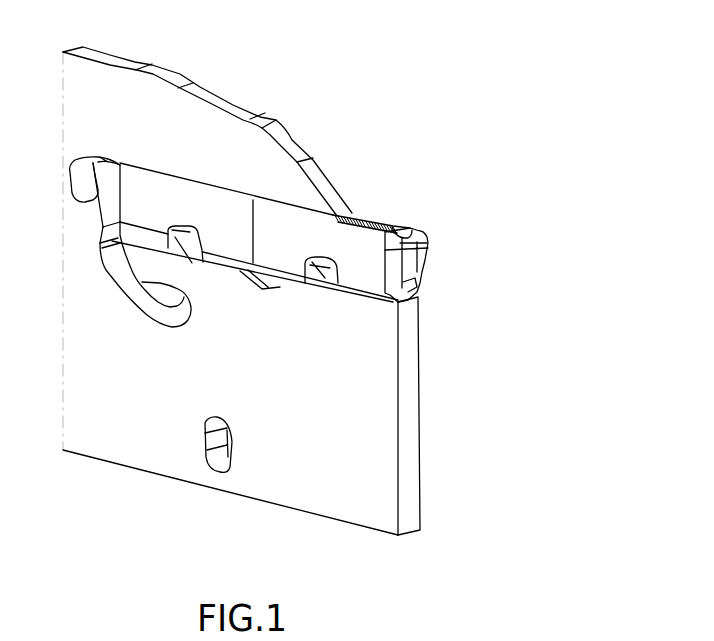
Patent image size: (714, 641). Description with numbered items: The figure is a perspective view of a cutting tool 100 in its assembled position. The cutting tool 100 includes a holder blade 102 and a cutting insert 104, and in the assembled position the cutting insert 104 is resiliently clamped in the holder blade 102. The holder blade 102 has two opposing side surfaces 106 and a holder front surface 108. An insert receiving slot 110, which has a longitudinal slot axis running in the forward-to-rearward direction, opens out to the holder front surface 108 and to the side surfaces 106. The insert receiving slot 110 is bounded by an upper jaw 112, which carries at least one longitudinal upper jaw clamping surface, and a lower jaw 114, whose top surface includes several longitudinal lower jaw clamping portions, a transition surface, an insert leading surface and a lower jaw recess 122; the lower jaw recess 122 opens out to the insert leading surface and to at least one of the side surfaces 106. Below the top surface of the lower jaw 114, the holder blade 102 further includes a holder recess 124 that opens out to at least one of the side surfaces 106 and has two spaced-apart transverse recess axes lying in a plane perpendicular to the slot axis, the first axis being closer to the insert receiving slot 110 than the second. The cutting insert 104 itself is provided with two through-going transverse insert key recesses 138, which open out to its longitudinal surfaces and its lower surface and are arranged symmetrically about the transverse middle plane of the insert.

The cutting tool 100 is at (510, 165).
The holder blade 102 is at (198, 72).
The cutting insert 104 is at (398, 218).
The side surfaces 106 is at (347, 513).
The holder front surface 108 is at (412, 447).
The insert receiving slot 110 is at (383, 210).
The upper jaw 112 is at (230, 136).
The lower jaw 114 is at (367, 333).
The lower jaw recess 122 is at (261, 286).
The holder recess 124 is at (220, 457).
The insert key recesses 138 is at (194, 238).